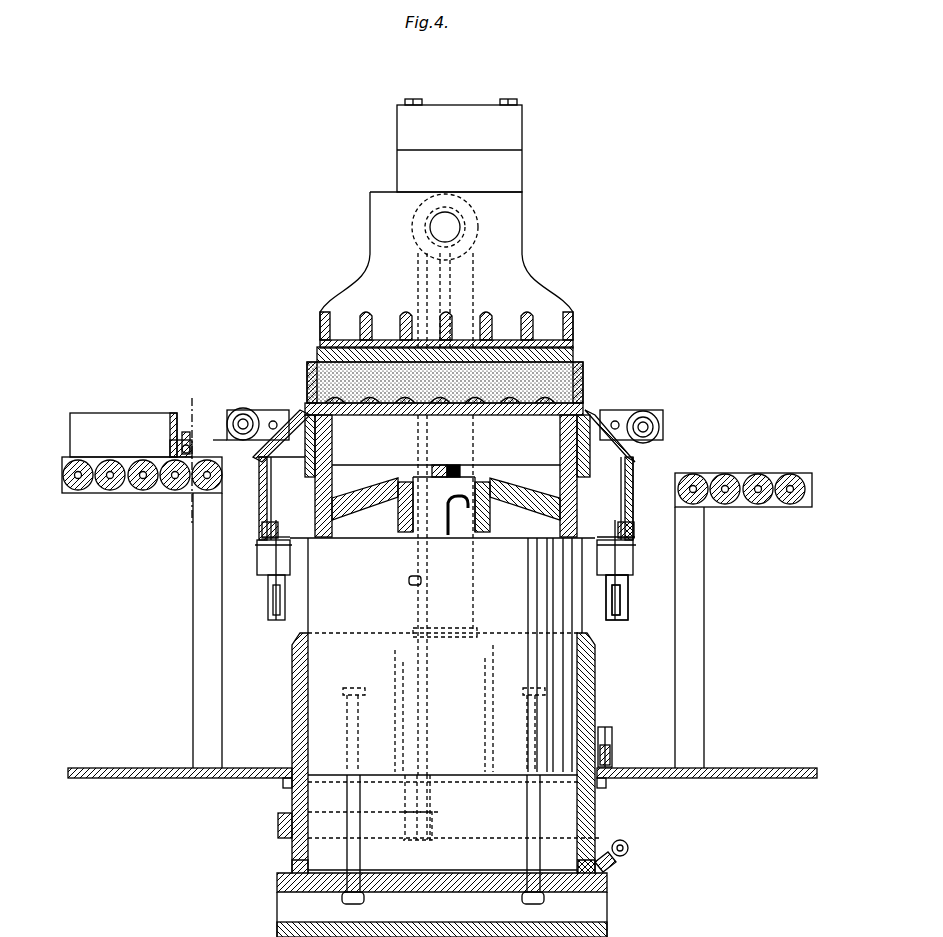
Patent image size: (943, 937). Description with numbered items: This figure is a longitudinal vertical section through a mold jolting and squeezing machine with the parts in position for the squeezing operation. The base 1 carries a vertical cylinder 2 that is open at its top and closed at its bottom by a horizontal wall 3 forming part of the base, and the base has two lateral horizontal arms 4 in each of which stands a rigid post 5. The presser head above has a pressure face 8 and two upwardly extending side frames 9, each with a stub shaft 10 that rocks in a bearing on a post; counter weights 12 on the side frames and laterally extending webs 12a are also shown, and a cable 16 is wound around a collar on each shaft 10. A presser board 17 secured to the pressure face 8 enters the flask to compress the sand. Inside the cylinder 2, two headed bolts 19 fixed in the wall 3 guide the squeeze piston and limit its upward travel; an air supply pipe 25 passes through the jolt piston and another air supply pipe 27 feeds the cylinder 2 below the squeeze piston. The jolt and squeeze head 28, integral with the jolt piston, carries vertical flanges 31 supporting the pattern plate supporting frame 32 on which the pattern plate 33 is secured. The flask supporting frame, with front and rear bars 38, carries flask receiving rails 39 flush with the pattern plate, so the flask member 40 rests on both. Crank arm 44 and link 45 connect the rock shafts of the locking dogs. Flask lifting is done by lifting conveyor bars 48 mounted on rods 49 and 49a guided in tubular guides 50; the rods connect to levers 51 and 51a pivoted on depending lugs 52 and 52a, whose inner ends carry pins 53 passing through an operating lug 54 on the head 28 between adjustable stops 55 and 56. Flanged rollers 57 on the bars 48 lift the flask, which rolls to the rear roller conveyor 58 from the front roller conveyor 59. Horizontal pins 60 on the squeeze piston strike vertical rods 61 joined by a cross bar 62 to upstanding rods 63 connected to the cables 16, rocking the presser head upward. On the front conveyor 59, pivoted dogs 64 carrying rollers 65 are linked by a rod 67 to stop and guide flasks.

The base 1 is at (277, 880).
The vertical cylinder 2 is at (292, 700).
The horizontal wall 3 is at (438, 886).
The horizontal extensions or arms 4 is at (395, 650).
The upstanding rigid post 5 is at (470, 262).
The pressure face 8 is at (380, 340).
The side frames 9 is at (525, 288).
The axle or stub shaft 10 is at (440, 227).
The counter weights 12 is at (500, 165).
The laterally extending webs 12a is at (450, 288).
The cable 16 is at (418, 262).
The presser board 17 is at (575, 356).
The headed bolts 19 is at (360, 862).
The air supply pipe 25 is at (452, 538).
The air supply pipe 27 is at (628, 846).
The jolt and squeeze head 28 is at (398, 505).
The vertical flanges 31 is at (340, 497).
The pattern plate supporting frame 32 is at (343, 437).
The pattern plate 33 is at (461, 418).
The front and rear bars 38 is at (560, 432).
The flask receiving rails 39 is at (305, 407).
The flask member 40 is at (320, 378).
The crank arm 44 is at (612, 735).
The link 45 is at (612, 758).
The lifting conveyor bars 48 is at (242, 410).
The vertically reciprocating rods 49 is at (286, 592).
The vertically reciprocating rods 49a is at (620, 590).
The tubular guides 50 is at (262, 560).
The levers 51 is at (282, 610).
The levers 51a is at (625, 610).
The depending lug 52 is at (272, 492).
The depending lugs 52a is at (565, 540).
The pin 53 is at (272, 588).
The operating lug 54 is at (272, 540).
The adjustable stop collar or nut 55 is at (262, 528).
The adjustable stop collar or nut 56 is at (262, 546).
The flanged rollers 57 is at (240, 428).
The roller conveyor 58 is at (790, 507).
The roller conveyor 59 is at (170, 493).
The horizontal pins 60 is at (409, 582).
The vertical rods 61 is at (405, 800).
The horizontal cross bar 62 is at (278, 822).
The upstanding rods 63 is at (432, 800).
The pivoted dogs 64 is at (182, 440).
The rollers 65 is at (182, 449).
The rod 67 is at (215, 482).